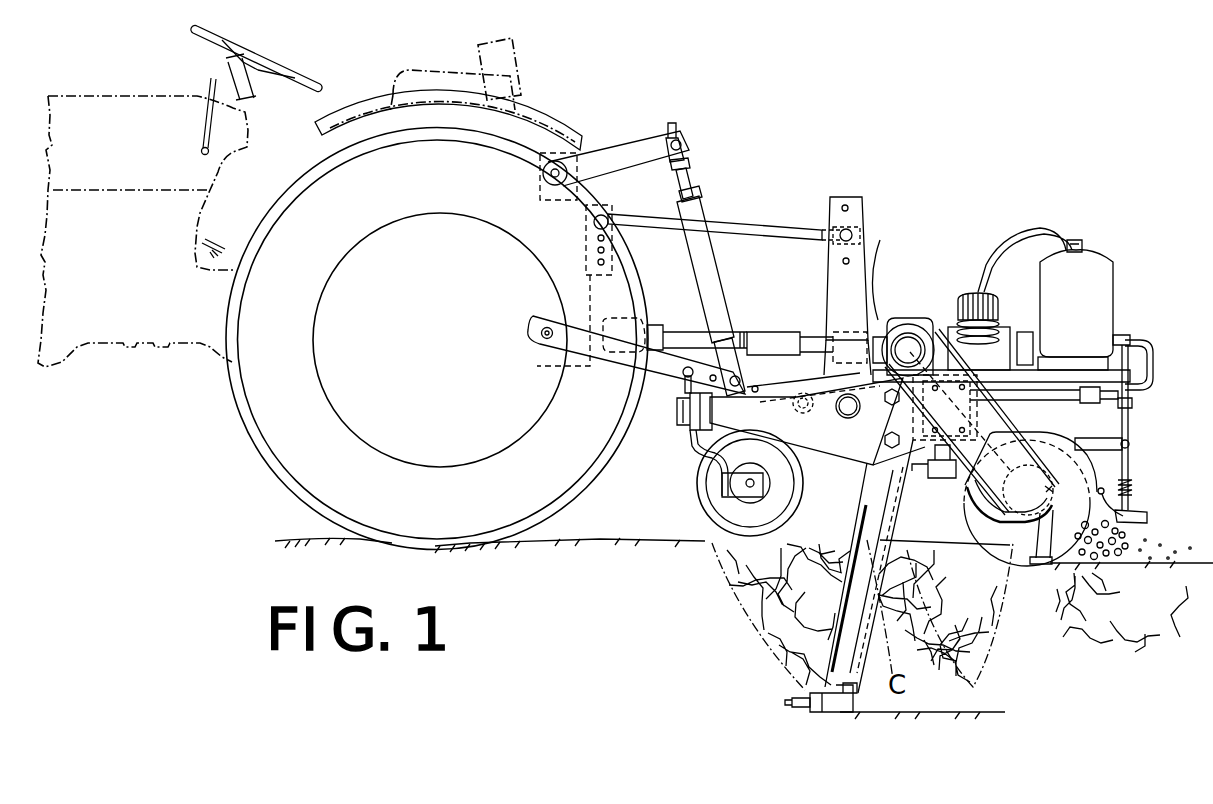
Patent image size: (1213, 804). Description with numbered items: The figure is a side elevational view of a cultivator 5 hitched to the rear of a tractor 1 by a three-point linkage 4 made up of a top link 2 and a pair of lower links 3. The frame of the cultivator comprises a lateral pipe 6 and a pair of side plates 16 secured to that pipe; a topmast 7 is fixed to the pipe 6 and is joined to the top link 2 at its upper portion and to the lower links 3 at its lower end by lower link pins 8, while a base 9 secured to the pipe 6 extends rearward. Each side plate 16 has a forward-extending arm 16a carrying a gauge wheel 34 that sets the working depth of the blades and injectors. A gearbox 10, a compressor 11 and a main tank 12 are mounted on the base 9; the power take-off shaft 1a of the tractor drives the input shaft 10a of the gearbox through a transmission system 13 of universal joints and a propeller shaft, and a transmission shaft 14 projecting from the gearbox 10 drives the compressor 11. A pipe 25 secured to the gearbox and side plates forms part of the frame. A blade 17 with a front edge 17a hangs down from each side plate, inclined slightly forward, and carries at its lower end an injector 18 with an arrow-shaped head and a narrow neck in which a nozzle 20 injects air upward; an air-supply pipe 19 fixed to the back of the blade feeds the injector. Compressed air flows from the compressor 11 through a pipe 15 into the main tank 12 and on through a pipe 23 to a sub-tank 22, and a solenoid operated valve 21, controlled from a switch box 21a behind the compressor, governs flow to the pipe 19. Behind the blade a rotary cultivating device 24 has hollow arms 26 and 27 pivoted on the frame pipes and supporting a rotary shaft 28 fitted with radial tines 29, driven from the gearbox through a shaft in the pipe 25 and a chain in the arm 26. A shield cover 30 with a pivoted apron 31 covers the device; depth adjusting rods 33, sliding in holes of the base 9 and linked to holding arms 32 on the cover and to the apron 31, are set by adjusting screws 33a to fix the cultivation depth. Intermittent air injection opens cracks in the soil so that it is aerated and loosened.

The tractor 1 is at (358, 78).
The power take-off shaft 1a is at (598, 332).
The top link 2 is at (745, 230).
The lower links 3 is at (673, 376).
The three-point linkage 4 is at (722, 207).
The cultivator 5 is at (1099, 243).
The lateral pipe 6 is at (848, 418).
The topmast 7 is at (862, 214).
The lower link pins 8 is at (806, 416).
The base 9 is at (1008, 384).
The gearbox 10 is at (900, 318).
The input shaft 10a is at (880, 250).
The compressor 11 is at (992, 326).
The main tank 12 is at (1105, 297).
The transmission system 13 is at (783, 333).
The transmission shaft 14 is at (973, 292).
The pipe 15 is at (1022, 228).
The side plates 16 is at (867, 463).
The arm 16a is at (707, 437).
The blade 17 is at (882, 528).
The edge 17a is at (858, 524).
The injector 18 is at (832, 713).
The air-supply pipe 19 is at (933, 480).
The nozzle 20 is at (788, 700).
The solenoid operated valve 21 is at (948, 480).
The switch box 21a is at (1025, 330).
The sub-tank 22 is at (1012, 443).
The pipe 23 is at (1052, 402).
The rotary cultivating device 24 is at (1139, 447).
The pipe 25 is at (913, 343).
The hollow arm 26 is at (1036, 547).
The hollow arm 27 is at (1006, 508).
The rotary shaft 28 is at (1054, 492).
The tines 29 is at (1093, 645).
The shield cover 30 is at (1040, 466).
The apron 31 is at (1148, 515).
The holding arms 32 is at (1100, 451).
The depth adjusting rods 33 is at (1130, 462).
The adjusting screws 33a is at (1150, 342).
The gauge wheel 34 is at (697, 490).